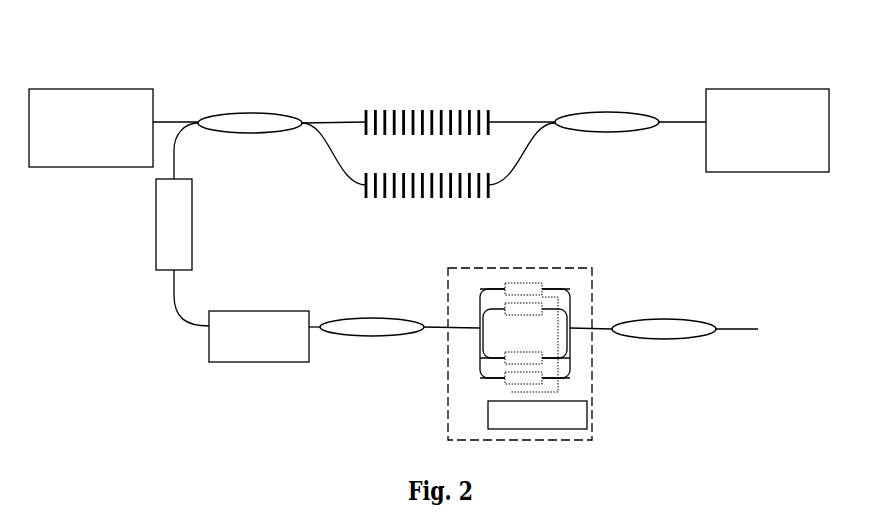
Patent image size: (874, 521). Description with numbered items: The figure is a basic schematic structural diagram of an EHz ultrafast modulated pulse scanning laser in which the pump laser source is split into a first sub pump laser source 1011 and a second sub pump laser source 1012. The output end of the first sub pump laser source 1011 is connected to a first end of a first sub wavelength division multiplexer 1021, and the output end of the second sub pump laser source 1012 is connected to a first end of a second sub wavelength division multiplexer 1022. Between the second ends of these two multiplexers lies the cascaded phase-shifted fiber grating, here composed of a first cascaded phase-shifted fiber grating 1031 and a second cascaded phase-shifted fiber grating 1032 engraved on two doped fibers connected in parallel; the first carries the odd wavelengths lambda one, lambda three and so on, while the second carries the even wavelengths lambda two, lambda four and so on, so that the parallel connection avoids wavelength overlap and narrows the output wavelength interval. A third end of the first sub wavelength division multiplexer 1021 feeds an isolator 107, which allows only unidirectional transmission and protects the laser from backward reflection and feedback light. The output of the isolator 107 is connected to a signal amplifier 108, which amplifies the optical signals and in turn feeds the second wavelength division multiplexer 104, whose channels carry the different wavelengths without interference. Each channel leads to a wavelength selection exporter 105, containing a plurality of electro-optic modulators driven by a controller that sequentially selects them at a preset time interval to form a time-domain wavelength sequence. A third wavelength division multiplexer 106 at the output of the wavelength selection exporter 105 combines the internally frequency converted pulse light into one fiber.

The first sub pump laser source 1011 is at (68, 89).
The second sub pump laser source 1012 is at (765, 89).
The first sub wavelength division multiplexer 1021 is at (265, 113).
The second sub wavelength division multiplexer 1022 is at (598, 112).
The first cascaded phase-shifted fiber grating 1031 is at (490, 115).
The second cascaded phase-shifted fiber grating 1032 is at (492, 191).
The isolator 107 is at (192, 215).
The signal amplifier 108 is at (240, 311).
The second wavelength division multiplexer 104 is at (378, 318).
The wavelength selection exporter 105 is at (520, 268).
The third wavelength division multiplexer 106 is at (665, 319).